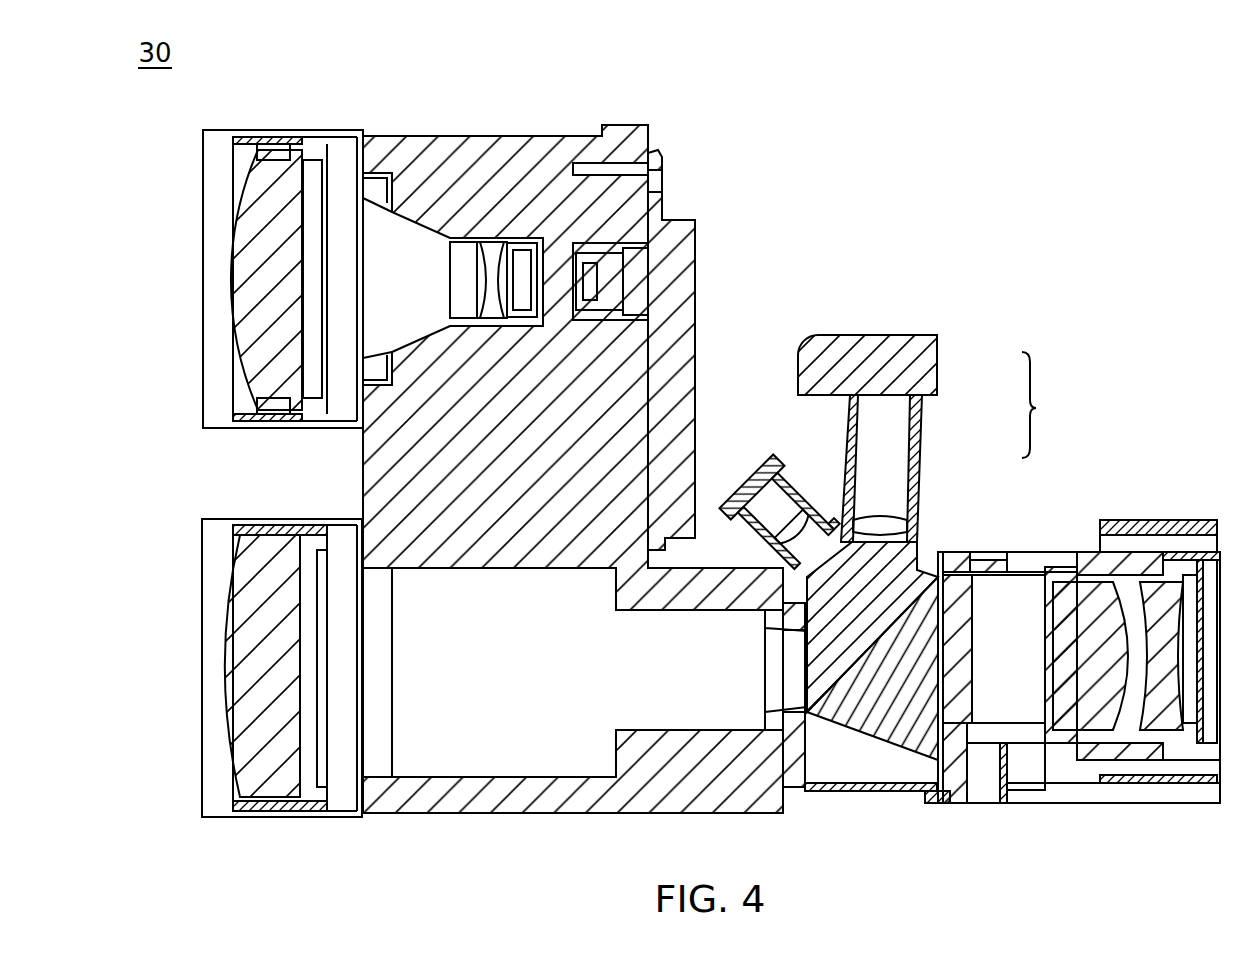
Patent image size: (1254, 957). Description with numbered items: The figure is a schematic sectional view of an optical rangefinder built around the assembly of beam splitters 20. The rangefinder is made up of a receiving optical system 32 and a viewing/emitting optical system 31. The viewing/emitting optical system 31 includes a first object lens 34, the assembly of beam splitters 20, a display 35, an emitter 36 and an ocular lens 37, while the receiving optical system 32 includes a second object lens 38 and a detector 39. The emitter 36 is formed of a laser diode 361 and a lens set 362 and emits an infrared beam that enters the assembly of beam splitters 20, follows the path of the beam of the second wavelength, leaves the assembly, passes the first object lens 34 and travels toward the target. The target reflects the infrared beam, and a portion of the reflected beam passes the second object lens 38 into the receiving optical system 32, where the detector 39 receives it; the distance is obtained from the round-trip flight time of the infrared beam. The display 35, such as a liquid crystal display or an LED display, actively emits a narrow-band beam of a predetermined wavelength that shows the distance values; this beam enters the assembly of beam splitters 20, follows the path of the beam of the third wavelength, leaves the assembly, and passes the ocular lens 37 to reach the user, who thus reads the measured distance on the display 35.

The viewing/emitting optical system 31 is at (589, 830).
The receiving optical system 32 is at (424, 111).
The first object lens 34 is at (273, 790).
The display 35 is at (753, 484).
The emitter 36 is at (1044, 405).
The laser diode 361 is at (924, 368).
The lens set 362 is at (880, 523).
The ocular lens 37 is at (1172, 720).
The second object lens 38 is at (236, 284).
The detector 39 is at (638, 283).
The assembly of beam splitters 20 is at (864, 756).